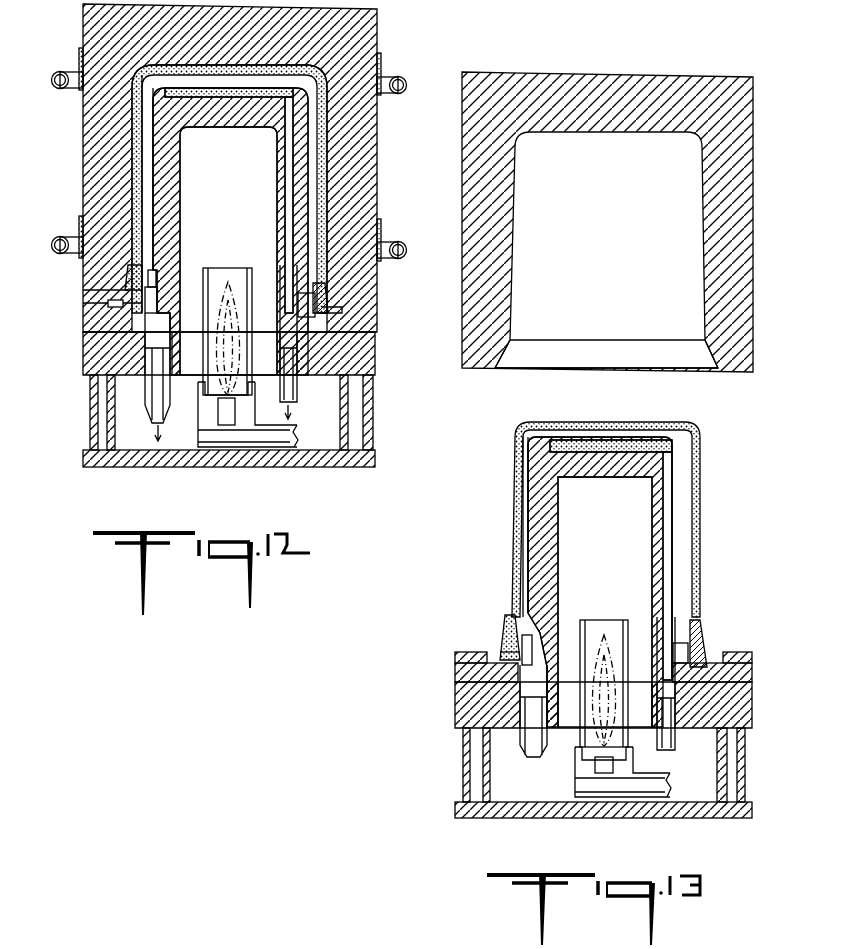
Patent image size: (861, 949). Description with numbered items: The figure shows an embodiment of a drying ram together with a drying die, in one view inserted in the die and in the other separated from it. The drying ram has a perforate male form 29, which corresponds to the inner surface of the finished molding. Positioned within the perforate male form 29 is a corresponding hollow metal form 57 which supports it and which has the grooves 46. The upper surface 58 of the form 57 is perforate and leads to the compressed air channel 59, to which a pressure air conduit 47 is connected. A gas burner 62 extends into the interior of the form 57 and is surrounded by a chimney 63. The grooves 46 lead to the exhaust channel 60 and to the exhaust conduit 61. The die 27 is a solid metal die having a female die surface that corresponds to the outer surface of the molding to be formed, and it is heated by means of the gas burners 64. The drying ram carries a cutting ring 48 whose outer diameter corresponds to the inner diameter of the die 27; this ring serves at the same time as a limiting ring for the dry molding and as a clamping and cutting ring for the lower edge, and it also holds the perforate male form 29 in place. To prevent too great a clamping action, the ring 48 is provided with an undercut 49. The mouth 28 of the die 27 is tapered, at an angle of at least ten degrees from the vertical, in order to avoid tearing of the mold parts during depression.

In FIG. 12, the die 27 is at (355, 22).
In FIG. 13, the die 27 is at (565, 85).
In FIG. 12, the opening 28 is at (122, 299).
In FIG. 13, the opening 28 is at (712, 412).
In FIG. 12, the perforate male form 29 is at (243, 76).
In FIG. 13, the perforate male form 29 is at (700, 508).
In FIG. 12, the grooves 46 is at (148, 214).
In FIG. 13, the grooves 46 is at (521, 509).
In FIG. 12, the pressure air conduit 47 is at (293, 400).
In FIG. 13, the pressure air conduit 47 is at (675, 746).
In FIG. 12, the cutting ring 48 is at (116, 308).
In FIG. 13, the cutting ring 48 is at (505, 646).
In FIG. 12, the undercut 49 is at (138, 288).
In FIG. 13, the undercut 49 is at (512, 622).
In FIG. 12, the hollow metal form 57 is at (170, 185).
In FIG. 13, the hollow metal form 57 is at (535, 490).
In FIG. 12, the lining 58 is at (215, 97).
In FIG. 13, the lining 58 is at (638, 440).
In FIG. 12, the compressed air channel 59 is at (287, 164).
In FIG. 13, the compressed air channel 59 is at (672, 482).
In FIG. 12, the exhaust channel 60 is at (298, 300).
In FIG. 13, the exhaust channel 60 is at (700, 648).
In FIG. 12, the exhaust conduit 61 is at (152, 417).
In FIG. 13, the exhaust conduit 61 is at (545, 740).
In FIG. 12, the gas burner 62 is at (235, 448).
In FIG. 13, the gas burner 62 is at (608, 790).
In FIG. 12, the chimney 63 is at (204, 286).
In FIG. 13, the chimney 63 is at (628, 630).
In FIG. 12, the gas burners 64 is at (74, 70).